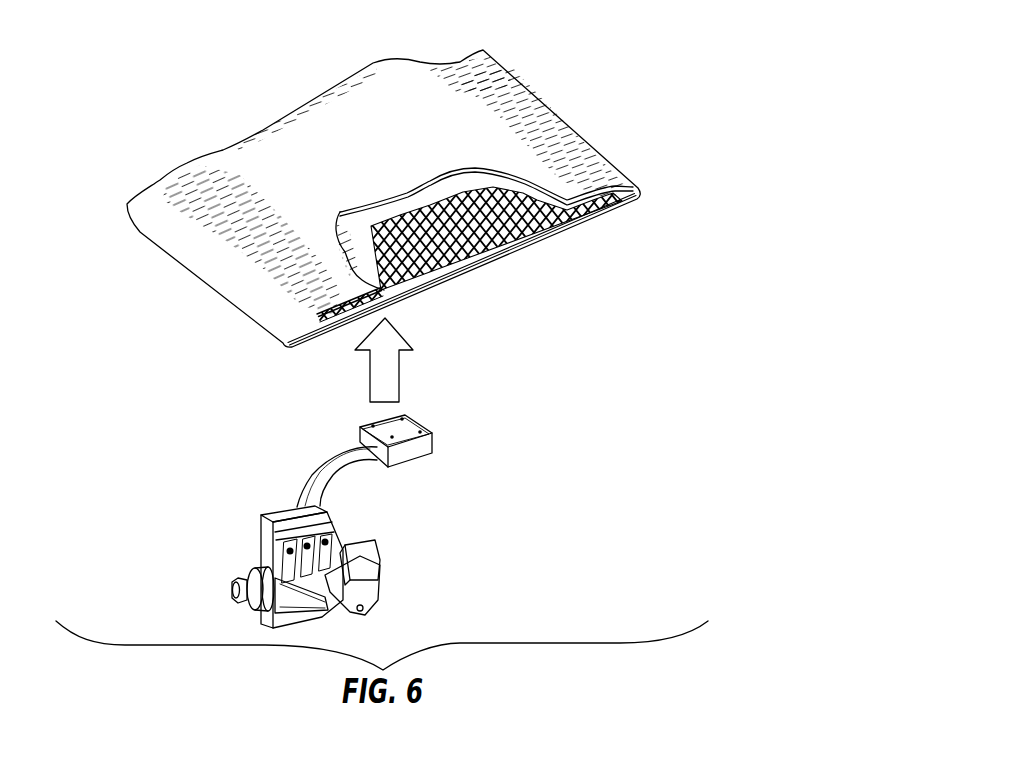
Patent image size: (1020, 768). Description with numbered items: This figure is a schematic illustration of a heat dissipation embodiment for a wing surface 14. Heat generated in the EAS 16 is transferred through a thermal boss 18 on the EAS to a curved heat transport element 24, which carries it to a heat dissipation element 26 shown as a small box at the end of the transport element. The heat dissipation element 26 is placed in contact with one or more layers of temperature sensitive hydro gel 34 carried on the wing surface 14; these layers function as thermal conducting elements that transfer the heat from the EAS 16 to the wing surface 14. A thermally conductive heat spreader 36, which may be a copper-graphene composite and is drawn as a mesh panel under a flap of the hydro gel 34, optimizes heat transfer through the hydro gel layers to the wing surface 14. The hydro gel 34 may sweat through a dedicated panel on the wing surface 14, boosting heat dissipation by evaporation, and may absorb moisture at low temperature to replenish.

The wing surface 14 is at (397, 105).
The EAS 16 is at (264, 567).
The thermal boss 18 is at (267, 540).
The heat transport element 24 is at (322, 475).
The heat dissipation element 26 is at (412, 453).
The temperature sensitive hydro gel 34 is at (458, 187).
The thermally conductive heat spreader 36 is at (440, 288).